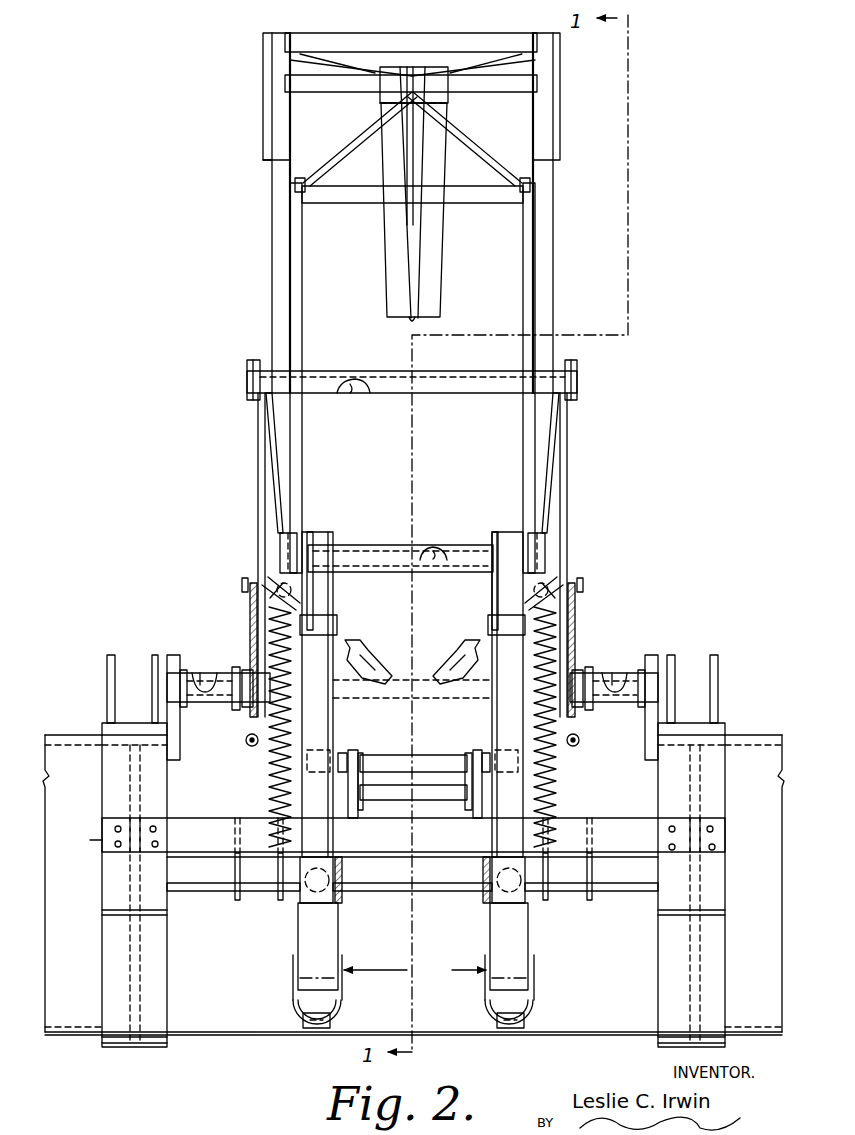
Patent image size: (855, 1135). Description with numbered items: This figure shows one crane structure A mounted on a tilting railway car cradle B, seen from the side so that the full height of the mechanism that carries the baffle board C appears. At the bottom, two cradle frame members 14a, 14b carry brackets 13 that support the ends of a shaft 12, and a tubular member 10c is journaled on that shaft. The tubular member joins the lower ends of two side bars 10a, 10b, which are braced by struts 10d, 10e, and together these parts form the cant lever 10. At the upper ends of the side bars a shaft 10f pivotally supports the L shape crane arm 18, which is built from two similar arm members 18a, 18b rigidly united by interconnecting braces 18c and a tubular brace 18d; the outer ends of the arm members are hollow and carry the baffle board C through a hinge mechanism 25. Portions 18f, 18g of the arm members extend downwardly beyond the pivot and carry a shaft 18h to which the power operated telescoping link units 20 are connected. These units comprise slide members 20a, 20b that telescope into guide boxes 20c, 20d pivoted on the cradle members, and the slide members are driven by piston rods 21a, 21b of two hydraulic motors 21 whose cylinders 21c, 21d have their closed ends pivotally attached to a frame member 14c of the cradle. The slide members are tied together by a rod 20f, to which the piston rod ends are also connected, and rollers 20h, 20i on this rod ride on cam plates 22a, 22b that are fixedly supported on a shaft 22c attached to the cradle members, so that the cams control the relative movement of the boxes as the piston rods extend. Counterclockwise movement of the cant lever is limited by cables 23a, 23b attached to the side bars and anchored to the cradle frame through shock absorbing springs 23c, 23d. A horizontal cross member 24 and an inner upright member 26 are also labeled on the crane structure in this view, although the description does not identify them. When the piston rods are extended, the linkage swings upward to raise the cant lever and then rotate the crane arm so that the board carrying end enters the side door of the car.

The crane structure A is at (262, 227).
The tilting railway car cradle B is at (61, 735).
The baffle board C is at (404, 229).
The cant lever 10 is at (252, 426).
The side bar 10a is at (260, 465).
The side bar 10b is at (562, 464).
The tubular member 10c is at (420, 680).
The strut 10d is at (369, 653).
The strut 10e is at (472, 650).
The shaft 10f is at (354, 392).
The shaft 12 is at (210, 678).
The bracket 13 is at (177, 657).
The cradle frame member 14a is at (137, 942).
The cradle frame member 14b is at (697, 935).
The frame member 14c is at (560, 1007).
The L shape crane arm 18 is at (402, 211).
The arm member 18a is at (272, 128).
The arm member 18b is at (547, 132).
The interconnecting brace 18c is at (330, 190).
The tubular brace 18d is at (305, 38).
The downwardly extending portion 18f is at (282, 487).
The downwardly extending portion 18g is at (540, 485).
The shaft 18h is at (433, 549).
The power operated telescoping link unit 20 is at (411, 765).
The slide member 20a is at (317, 543).
The slide member 20b is at (507, 538).
The guide box 20c is at (320, 653).
The guide box 20d is at (497, 650).
The rod 20f is at (384, 769).
The roller 20h is at (360, 754).
The roller 20i is at (467, 755).
The hydraulic motor 21 is at (415, 971).
The piston rod 21a is at (323, 806).
The piston rod 21b is at (507, 806).
The cylinder 21c is at (303, 953).
The cylinder 21d is at (517, 950).
The cam plate 22a is at (352, 750).
The cam plate 22b is at (473, 750).
The shaft 22c is at (428, 893).
The cable 23a is at (256, 632).
The cable 23b is at (576, 628).
The shock absorbing spring 23c is at (245, 740).
The shock absorbing spring 23d is at (580, 740).
The beam 24 is at (477, 393).
The hinge mechanism 25 is at (414, 194).
The inner post 26 is at (296, 317).